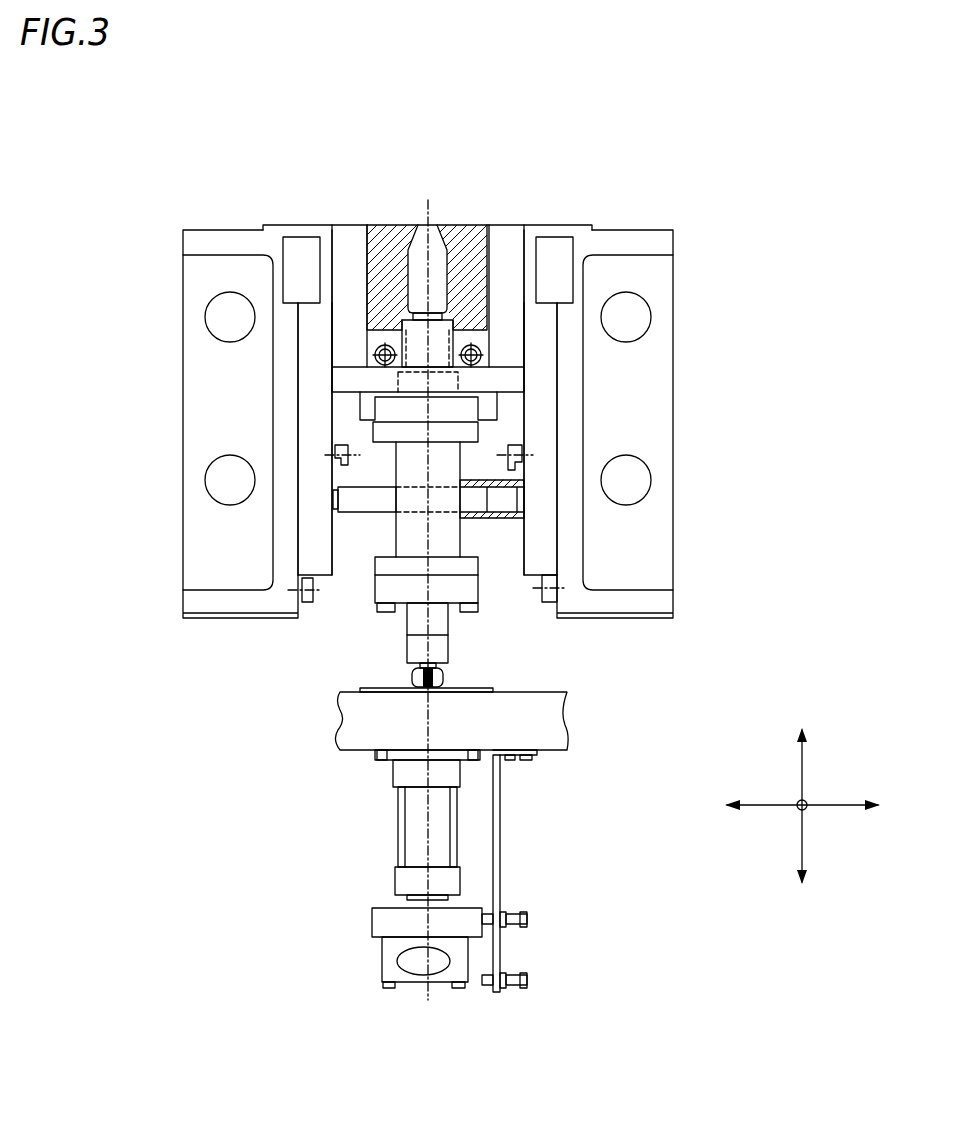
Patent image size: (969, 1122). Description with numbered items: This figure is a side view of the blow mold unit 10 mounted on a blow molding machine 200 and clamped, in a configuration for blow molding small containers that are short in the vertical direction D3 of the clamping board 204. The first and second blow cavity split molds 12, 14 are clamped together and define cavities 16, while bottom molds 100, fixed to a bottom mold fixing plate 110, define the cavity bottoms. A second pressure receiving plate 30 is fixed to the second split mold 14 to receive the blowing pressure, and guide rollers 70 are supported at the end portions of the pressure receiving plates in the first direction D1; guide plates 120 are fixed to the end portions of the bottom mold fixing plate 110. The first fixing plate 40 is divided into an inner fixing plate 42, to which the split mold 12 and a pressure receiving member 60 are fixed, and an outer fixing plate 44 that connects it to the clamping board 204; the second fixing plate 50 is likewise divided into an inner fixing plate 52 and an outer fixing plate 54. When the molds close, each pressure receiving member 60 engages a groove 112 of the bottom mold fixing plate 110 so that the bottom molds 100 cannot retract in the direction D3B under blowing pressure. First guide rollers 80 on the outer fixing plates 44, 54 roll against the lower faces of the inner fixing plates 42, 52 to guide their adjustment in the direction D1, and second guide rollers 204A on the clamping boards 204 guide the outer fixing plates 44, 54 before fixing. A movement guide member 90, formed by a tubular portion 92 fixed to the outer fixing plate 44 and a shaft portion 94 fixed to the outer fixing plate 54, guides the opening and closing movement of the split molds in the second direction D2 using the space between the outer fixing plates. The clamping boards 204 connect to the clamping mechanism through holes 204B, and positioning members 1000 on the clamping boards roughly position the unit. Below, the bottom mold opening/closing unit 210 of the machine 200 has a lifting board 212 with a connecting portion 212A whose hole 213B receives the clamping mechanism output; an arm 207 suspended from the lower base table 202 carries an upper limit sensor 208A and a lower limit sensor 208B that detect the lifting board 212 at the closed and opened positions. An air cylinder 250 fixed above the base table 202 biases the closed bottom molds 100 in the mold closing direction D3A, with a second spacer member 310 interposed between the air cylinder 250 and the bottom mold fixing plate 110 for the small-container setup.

The blow mold unit 10 is at (710, 290).
The first blow cavity split mold 12 is at (455, 228).
The second blow cavity split mold 14 is at (397, 228).
The cavity 16 is at (432, 224).
The second pressure receiving plate 30 is at (333, 385).
The first fixing plate 40 is at (563, 157).
The inner fixing plate 42 is at (508, 228).
The outer fixing plate 44 is at (545, 228).
The second fixing plate 50 is at (373, 155).
The inner fixing plate 52 is at (353, 228).
The outer fixing plate 54 is at (320, 228).
The pressure receiving member 60 is at (333, 418).
The guide roller 70 is at (172, 232).
The first guide roller 80 is at (333, 468).
The movement guide member 90 is at (428, 529).
The tubular portion 92 is at (492, 499).
The shaft portion 94 is at (364, 499).
The bottom mold 100 is at (283, 262).
The bottom mold fixing plate 110 is at (487, 430).
The groove 112 is at (408, 385).
The guide plate 120 is at (517, 382).
The blow molding machine 200 is at (326, 736).
The lower base table 202 is at (555, 723).
The clamping board 204 is at (198, 358).
The second guide roller 204A is at (306, 602).
The hole 204B is at (245, 300).
The arm 207 is at (500, 805).
The upper limit sensor 208A is at (527, 923).
The lower limit sensor 208B is at (527, 983).
The bottom mold opening/closing unit 210 is at (530, 853).
The lifting board 212 is at (383, 923).
The connecting portion 212A is at (418, 983).
The hole 213B is at (430, 965).
The air cylinder 250 is at (386, 843).
The second spacer member 310 is at (463, 604).
The positioning member 1000 is at (273, 226).
The first direction D1 is at (803, 797).
The second direction D2 is at (772, 805).
The vertical direction D3 is at (800, 762).
The mold closing direction D3A is at (801, 787).
The retracting direction D3B is at (801, 859).